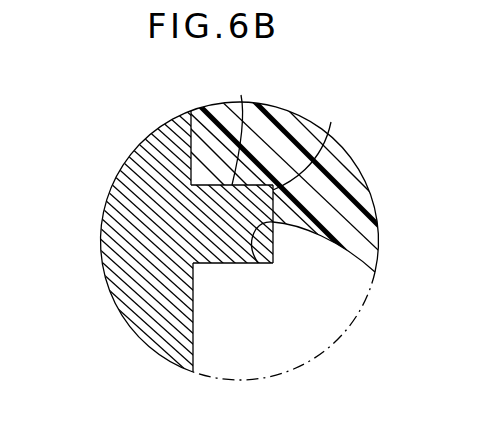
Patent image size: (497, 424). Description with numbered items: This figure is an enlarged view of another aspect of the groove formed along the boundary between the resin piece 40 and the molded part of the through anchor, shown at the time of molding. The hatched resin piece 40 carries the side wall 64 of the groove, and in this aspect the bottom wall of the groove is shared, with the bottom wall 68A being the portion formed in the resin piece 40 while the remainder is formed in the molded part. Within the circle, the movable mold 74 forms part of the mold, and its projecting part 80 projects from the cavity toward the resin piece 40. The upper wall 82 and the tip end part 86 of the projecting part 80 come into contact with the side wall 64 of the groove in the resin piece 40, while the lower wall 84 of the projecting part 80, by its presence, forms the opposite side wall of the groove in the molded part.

The resin piece 40 is at (182, 143).
The side wall 64 is at (207, 185).
The upper wall 82 is at (277, 129).
The tip end part 86 is at (328, 138).
The projecting part 80 is at (285, 244).
The lower wall 84 is at (212, 265).
The bottom wall 68A is at (255, 265).
The movable mold 74 is at (150, 310).